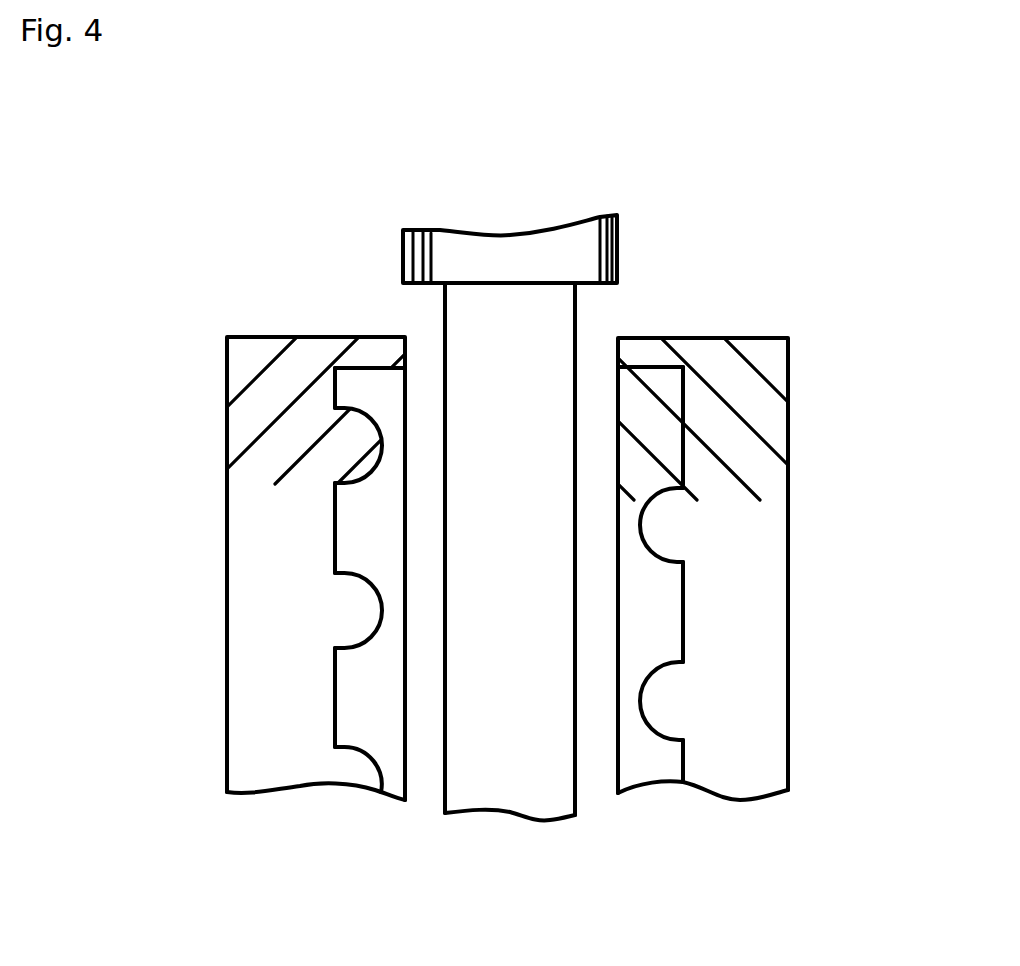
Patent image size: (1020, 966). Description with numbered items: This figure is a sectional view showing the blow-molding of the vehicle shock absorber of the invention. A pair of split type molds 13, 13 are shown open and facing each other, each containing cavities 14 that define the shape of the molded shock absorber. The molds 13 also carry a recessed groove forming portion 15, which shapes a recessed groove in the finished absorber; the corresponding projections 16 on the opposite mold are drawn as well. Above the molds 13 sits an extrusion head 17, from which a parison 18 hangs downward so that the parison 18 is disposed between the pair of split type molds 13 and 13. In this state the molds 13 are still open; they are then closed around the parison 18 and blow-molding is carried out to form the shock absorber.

The split type molds 13 is at (242, 468).
The cavities 14 is at (337, 513).
The recessed groove forming portion 15 is at (378, 443).
The right projection 16 is at (640, 519).
The extrusion head 17 is at (618, 244).
The parison 18 is at (502, 790).